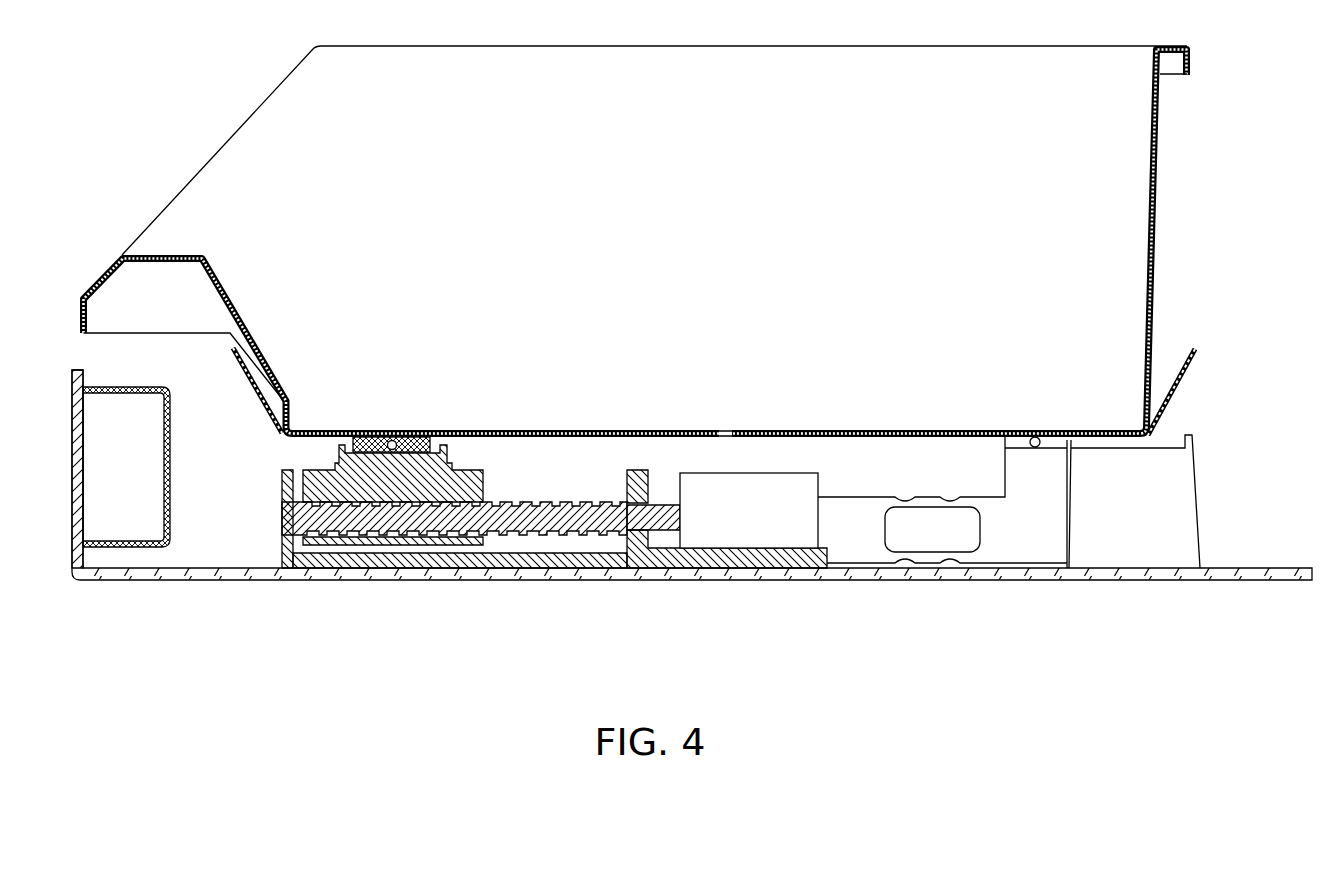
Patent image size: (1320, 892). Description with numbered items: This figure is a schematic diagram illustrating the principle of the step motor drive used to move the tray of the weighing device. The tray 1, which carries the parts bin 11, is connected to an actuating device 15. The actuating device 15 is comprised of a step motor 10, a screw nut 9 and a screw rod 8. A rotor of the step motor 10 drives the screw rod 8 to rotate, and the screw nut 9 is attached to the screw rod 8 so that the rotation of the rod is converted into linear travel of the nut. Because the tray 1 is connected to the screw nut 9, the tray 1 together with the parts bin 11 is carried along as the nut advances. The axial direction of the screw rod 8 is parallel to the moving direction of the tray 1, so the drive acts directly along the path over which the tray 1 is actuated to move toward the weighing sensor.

The tray 1 is at (1175, 360).
The screw rod 8 is at (332, 520).
The screw nut 9 is at (433, 535).
The step motor 10 is at (723, 515).
The parts bin 11 is at (1055, 170).
The actuating device 15 is at (312, 618).